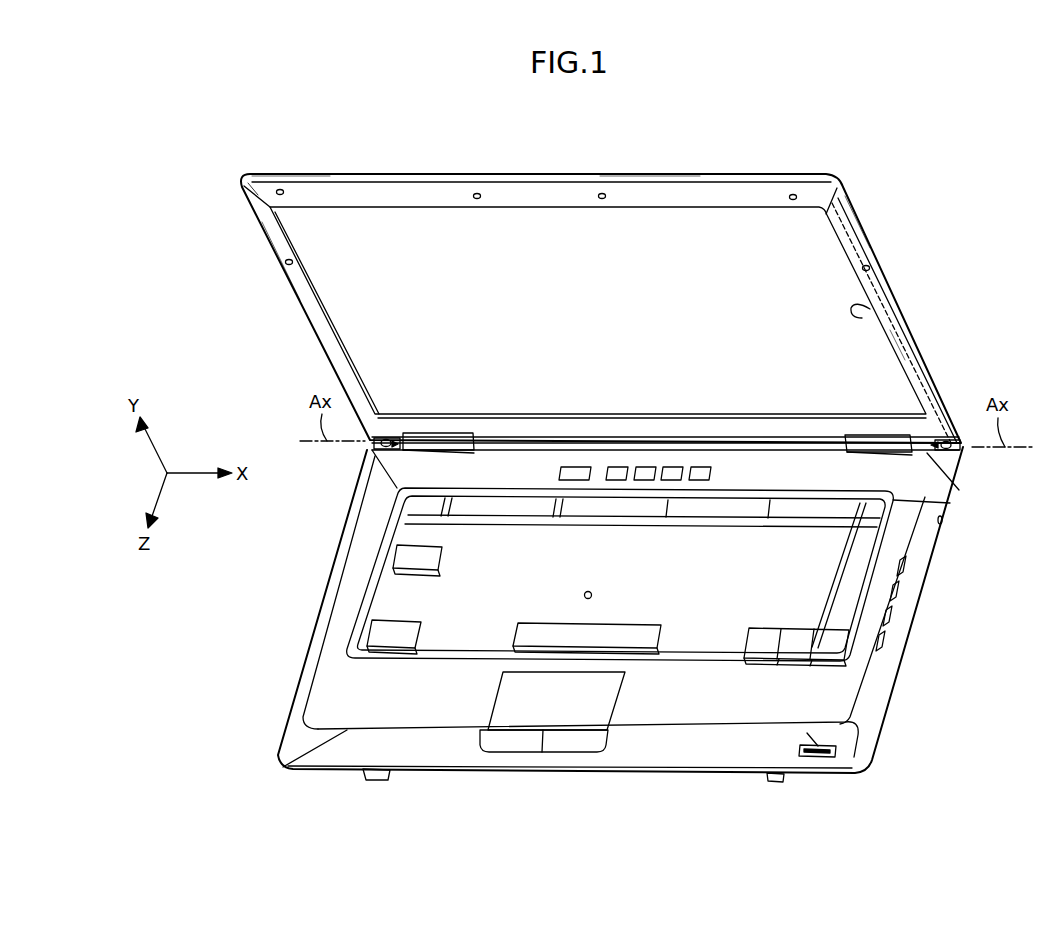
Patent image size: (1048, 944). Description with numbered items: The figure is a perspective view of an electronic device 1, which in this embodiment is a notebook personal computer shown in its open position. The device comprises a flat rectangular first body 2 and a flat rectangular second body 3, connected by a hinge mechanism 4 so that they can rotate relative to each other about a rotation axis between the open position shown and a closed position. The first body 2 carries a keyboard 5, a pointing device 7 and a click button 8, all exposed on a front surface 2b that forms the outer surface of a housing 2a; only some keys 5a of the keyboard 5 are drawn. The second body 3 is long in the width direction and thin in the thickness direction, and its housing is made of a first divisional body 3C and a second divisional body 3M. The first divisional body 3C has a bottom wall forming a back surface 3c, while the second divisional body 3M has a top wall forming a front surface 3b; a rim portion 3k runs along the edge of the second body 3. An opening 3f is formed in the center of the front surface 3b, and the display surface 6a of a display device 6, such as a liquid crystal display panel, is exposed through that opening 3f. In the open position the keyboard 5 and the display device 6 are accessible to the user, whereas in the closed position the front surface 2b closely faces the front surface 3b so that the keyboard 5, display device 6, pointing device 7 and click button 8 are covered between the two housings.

The electronic device 1 is at (838, 137).
The first body 2 is at (274, 747).
The housing 2a is at (300, 695).
The front surface 2b is at (428, 718).
The second body 3 is at (264, 243).
The back surface 3c is at (343, 193).
The first divisional body 3C is at (640, 172).
The second divisional body 3M is at (298, 290).
The rim portion of display housing 3k is at (862, 220).
The opening 3f is at (870, 309).
The front surface 3b is at (900, 351).
The hinge mechanism 4 is at (368, 447).
The keyboard 5 is at (361, 634).
The keys 5a is at (405, 560).
The display device 6 is at (370, 351).
The display surface 6a is at (516, 235).
The pointing device 7 is at (602, 708).
The click button 8 is at (574, 737).